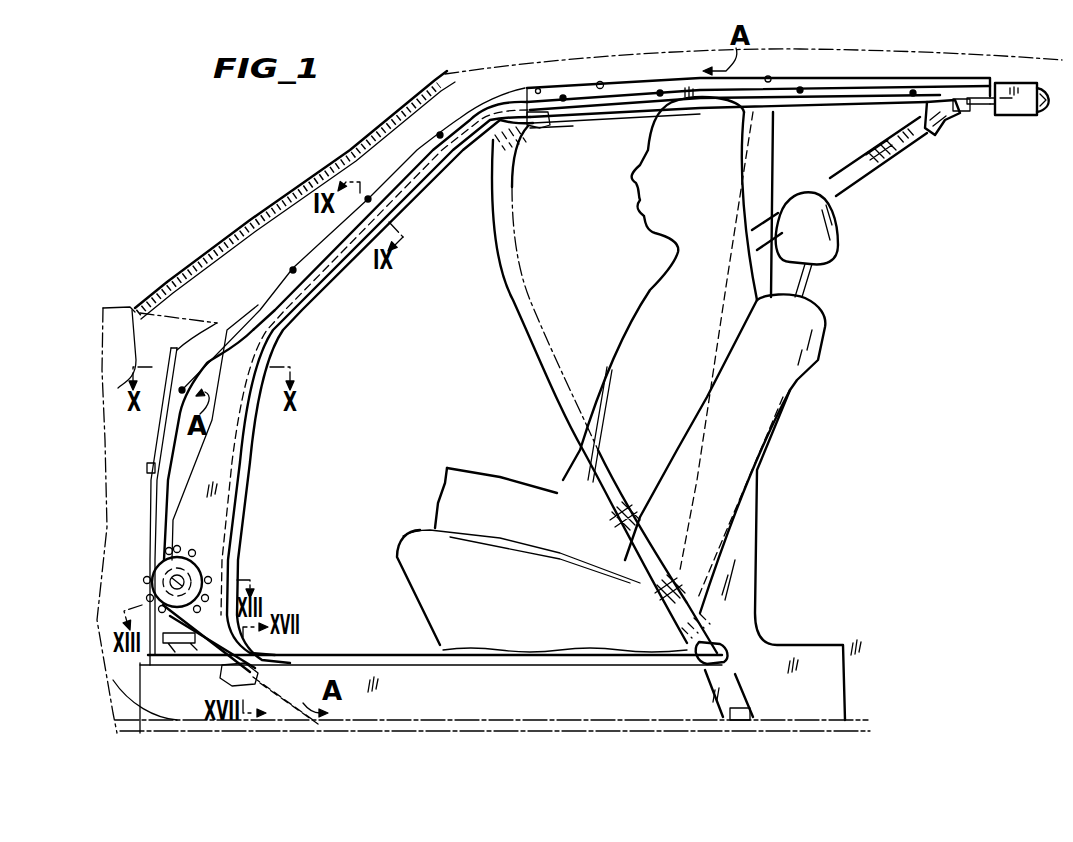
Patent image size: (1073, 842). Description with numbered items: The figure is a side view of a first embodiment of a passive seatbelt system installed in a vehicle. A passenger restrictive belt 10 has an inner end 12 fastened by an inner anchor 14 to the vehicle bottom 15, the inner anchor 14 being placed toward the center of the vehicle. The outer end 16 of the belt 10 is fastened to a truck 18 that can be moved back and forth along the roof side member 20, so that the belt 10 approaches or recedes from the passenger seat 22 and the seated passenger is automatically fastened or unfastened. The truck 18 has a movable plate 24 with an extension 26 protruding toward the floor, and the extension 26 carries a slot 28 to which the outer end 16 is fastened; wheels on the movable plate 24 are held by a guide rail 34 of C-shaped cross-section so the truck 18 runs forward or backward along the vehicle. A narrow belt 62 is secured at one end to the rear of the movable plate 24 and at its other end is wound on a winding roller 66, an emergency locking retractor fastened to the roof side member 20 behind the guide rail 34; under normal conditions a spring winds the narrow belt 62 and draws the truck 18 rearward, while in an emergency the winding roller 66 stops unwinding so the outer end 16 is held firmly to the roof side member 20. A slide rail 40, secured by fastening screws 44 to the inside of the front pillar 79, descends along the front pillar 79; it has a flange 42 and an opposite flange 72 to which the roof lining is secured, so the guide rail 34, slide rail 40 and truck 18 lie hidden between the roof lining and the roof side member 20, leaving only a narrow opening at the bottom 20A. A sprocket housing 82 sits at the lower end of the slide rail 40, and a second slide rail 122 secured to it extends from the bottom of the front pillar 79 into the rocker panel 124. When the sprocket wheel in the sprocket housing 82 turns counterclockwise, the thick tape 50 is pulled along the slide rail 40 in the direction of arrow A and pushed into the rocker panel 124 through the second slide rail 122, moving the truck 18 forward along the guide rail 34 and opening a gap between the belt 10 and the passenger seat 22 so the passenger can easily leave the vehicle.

The passenger restrictive belt 10 is at (533, 327).
The inner end 12 is at (719, 638).
The inner anchor 14 is at (739, 692).
The vehicle bottom 15 is at (513, 720).
The outer end 16 is at (905, 152).
The truck 18 is at (958, 117).
The roof side member 20 is at (640, 58).
The bottom 20A is at (630, 123).
The passenger seat 22 is at (677, 450).
The movable plate 24 is at (965, 118).
The extension 26 is at (940, 123).
The slot 28 is at (926, 133).
The guide rail 34 is at (870, 107).
The slide rail 40 is at (888, 82).
The flange 42 is at (823, 78).
The fastening screws 44 is at (600, 82).
The thick tape 50 is at (267, 677).
The narrow belt 62 is at (1020, 115).
The winding roller 66 is at (1026, 80).
The flange 72 is at (813, 94).
The front pillar 79 is at (223, 464).
The sprocket housing 82 is at (195, 558).
The second slide rail 122 is at (213, 653).
The rocker panel 124 is at (395, 657).